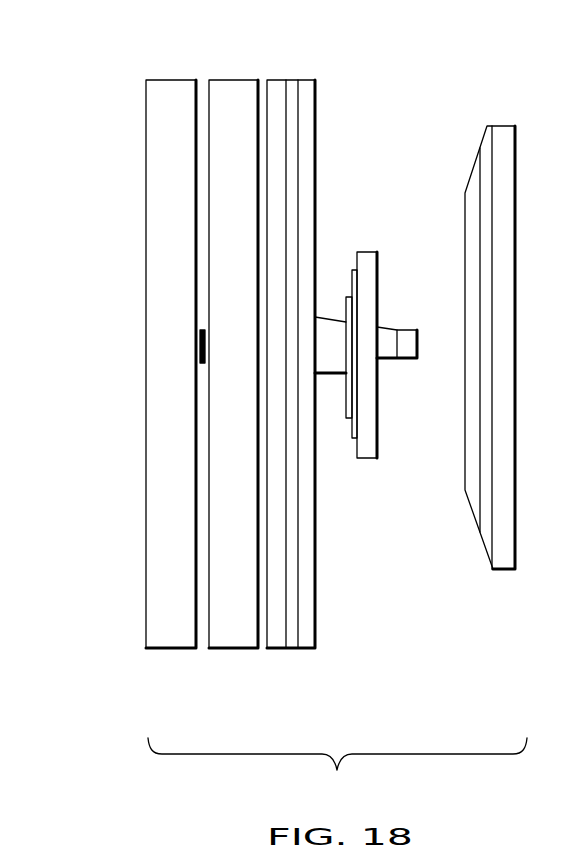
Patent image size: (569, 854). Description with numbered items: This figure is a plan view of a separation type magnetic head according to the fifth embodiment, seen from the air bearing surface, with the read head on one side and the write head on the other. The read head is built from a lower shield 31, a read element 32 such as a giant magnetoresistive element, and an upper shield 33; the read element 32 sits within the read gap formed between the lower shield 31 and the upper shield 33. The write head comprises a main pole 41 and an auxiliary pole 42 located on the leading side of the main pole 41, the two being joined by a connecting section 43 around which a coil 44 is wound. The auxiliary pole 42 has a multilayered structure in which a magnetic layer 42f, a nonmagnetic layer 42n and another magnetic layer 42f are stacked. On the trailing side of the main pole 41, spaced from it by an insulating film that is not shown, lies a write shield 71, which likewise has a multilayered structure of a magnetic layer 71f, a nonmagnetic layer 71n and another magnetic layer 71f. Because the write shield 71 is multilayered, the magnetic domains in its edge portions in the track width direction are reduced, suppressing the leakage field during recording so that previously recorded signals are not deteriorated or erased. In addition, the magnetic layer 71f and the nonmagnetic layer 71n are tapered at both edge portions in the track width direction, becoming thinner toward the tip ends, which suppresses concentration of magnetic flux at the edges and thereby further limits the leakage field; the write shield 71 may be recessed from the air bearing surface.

The lower shield 31 is at (173, 637).
The read element 32 is at (198, 353).
The upper shield 33 is at (233, 637).
The main pole 41 is at (406, 337).
The auxiliary pole 42 is at (289, 380).
The magnetic layer 42f is at (277, 86).
The nonmagnetic layer 42n is at (290, 86).
The connecting section 43 is at (332, 323).
The coil 44 is at (367, 447).
The write shield 71 is at (483, 364).
The magnetic layer 71f is at (502, 130).
The nonmagnetic layer 71n is at (485, 132).